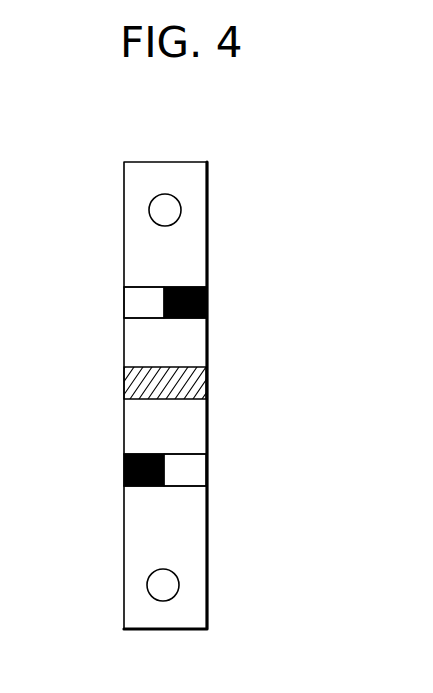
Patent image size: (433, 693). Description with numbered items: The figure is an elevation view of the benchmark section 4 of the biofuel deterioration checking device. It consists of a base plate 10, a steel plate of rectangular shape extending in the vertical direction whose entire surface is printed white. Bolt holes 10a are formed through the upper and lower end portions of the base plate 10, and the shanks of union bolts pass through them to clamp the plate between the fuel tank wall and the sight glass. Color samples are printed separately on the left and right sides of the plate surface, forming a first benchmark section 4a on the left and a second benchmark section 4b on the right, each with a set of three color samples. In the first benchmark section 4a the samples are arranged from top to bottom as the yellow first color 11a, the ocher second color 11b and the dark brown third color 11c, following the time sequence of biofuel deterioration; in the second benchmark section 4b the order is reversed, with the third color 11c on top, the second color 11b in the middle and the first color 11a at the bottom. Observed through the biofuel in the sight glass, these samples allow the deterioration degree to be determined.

The benchmark section 4 is at (193, 376).
The first benchmark section 4a is at (100, 283).
The second benchmark section 4b is at (230, 283).
The base plate 10 is at (193, 183).
The bolt hole 10a is at (158, 200).
The first color 11a is at (124, 302).
The second color 11b is at (130, 378).
The third color 11c is at (207, 303).